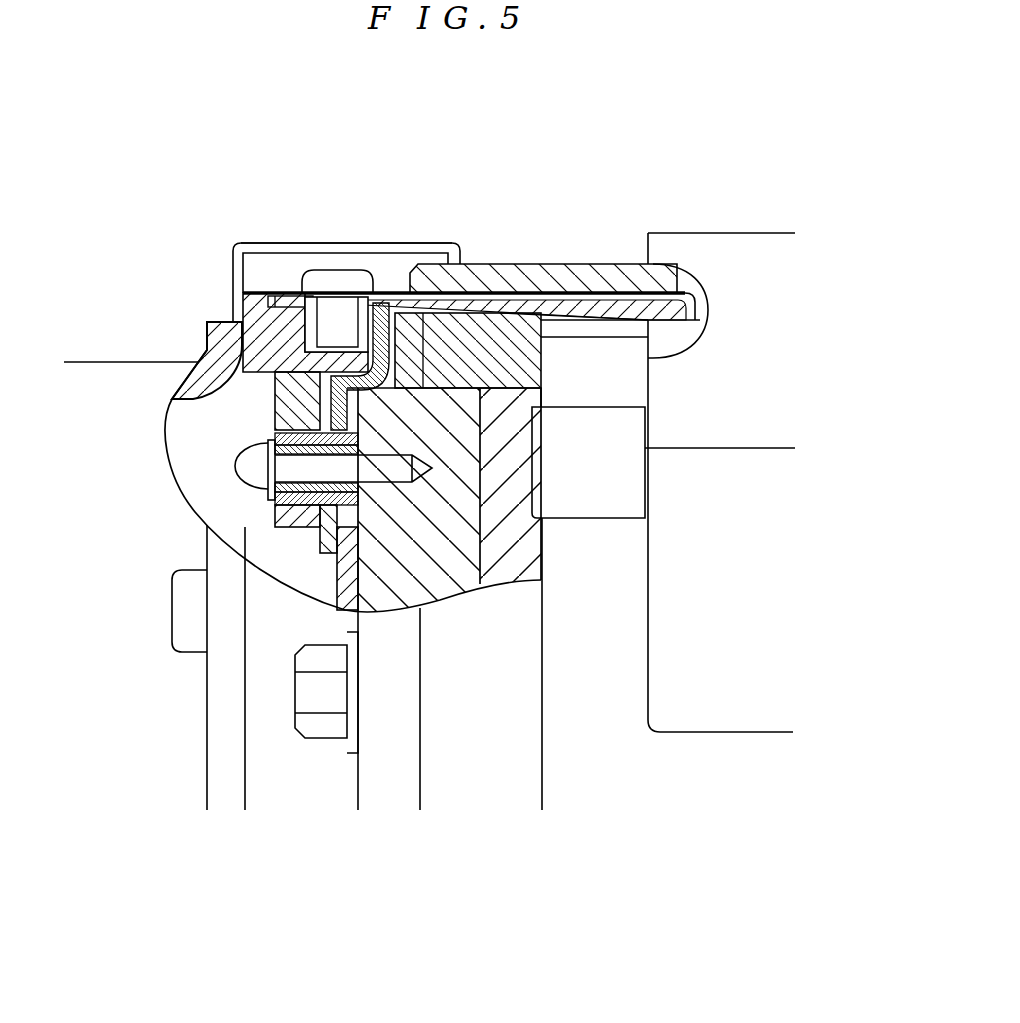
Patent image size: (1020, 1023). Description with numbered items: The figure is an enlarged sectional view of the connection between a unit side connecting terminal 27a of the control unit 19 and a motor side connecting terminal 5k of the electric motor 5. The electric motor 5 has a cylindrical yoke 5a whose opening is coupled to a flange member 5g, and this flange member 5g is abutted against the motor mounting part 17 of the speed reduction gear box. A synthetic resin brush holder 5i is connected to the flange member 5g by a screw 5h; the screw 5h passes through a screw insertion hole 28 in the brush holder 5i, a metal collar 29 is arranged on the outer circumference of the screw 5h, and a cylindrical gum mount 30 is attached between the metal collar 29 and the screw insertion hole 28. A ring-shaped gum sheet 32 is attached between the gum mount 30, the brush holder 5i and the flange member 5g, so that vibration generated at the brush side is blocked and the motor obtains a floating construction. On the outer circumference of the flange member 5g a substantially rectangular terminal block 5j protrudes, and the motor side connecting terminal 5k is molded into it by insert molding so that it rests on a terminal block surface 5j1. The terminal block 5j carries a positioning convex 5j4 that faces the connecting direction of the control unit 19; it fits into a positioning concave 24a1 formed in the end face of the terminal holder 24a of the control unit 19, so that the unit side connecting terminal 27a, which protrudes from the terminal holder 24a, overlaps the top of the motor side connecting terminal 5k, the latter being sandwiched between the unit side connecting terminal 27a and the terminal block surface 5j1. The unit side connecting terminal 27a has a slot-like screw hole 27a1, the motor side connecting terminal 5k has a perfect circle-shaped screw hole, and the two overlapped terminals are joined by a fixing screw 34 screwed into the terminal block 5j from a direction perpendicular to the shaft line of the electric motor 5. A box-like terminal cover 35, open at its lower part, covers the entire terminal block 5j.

The electric motor 5 is at (353, 481).
The yoke 5a is at (207, 345).
The flange member 5g is at (457, 558).
The screw 5h is at (247, 476).
The brush holder 5i is at (178, 390).
The terminal block 5j is at (240, 312).
The terminal block surface 5j1 is at (277, 303).
The positioning convex 5j4 is at (440, 333).
The motor side connecting terminal 5k is at (292, 303).
The motor mounting part 17 is at (518, 645).
The control unit 19 is at (727, 232).
The terminal holder 24a is at (550, 300).
The positioning concave 24a1 is at (440, 333).
The unit side connecting terminal 27a is at (608, 285).
The screw hole 27a1 is at (348, 280).
The screw insertion hole 28 is at (293, 410).
The metal collar 29 is at (283, 491).
The gum mount 30 is at (278, 530).
The gum sheet 32 is at (350, 563).
The fixing screw 34 is at (355, 305).
The terminal cover 35 is at (402, 247).